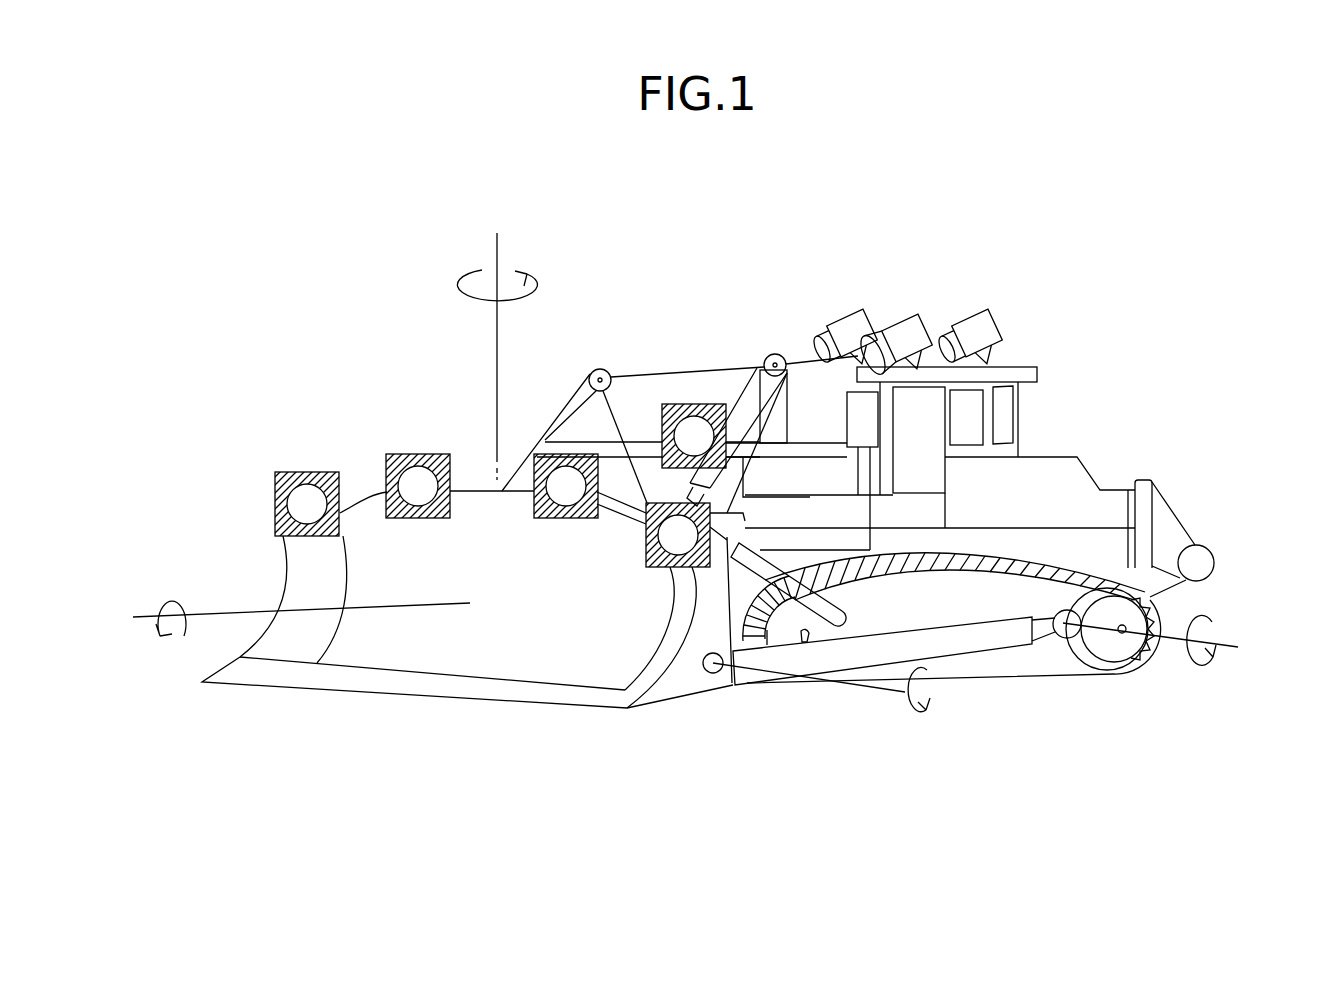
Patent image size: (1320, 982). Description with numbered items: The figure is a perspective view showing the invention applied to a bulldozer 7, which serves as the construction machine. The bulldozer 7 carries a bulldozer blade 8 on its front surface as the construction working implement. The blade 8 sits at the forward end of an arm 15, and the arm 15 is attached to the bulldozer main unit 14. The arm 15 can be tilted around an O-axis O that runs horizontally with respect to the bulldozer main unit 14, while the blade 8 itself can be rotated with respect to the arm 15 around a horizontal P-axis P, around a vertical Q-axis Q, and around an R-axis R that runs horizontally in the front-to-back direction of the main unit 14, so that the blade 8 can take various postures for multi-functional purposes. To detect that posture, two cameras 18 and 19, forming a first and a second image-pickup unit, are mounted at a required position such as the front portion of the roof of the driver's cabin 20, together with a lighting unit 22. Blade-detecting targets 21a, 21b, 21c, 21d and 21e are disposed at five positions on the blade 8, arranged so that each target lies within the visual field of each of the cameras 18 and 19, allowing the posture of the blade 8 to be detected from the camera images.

The bulldozer 7 is at (650, 304).
The bulldozer blade 8 is at (470, 706).
The bulldozer main unit 14 is at (1074, 453).
The arm 15 is at (1013, 655).
The camera 18 is at (850, 310).
The camera 19 is at (1003, 330).
The driver's cabin 20 is at (1028, 410).
The blade-detecting target 21a is at (312, 472).
The blade-detecting target 21b is at (423, 453).
The blade-detecting target 21c is at (563, 518).
The blade-detecting target 21d is at (672, 567).
The blade-detecting target 21e is at (695, 404).
The lighting unit 22 is at (907, 315).
The Q-axis Q is at (498, 250).
The R-axis R is at (210, 617).
The O-axis O is at (1228, 640).
The P-axis P is at (828, 688).